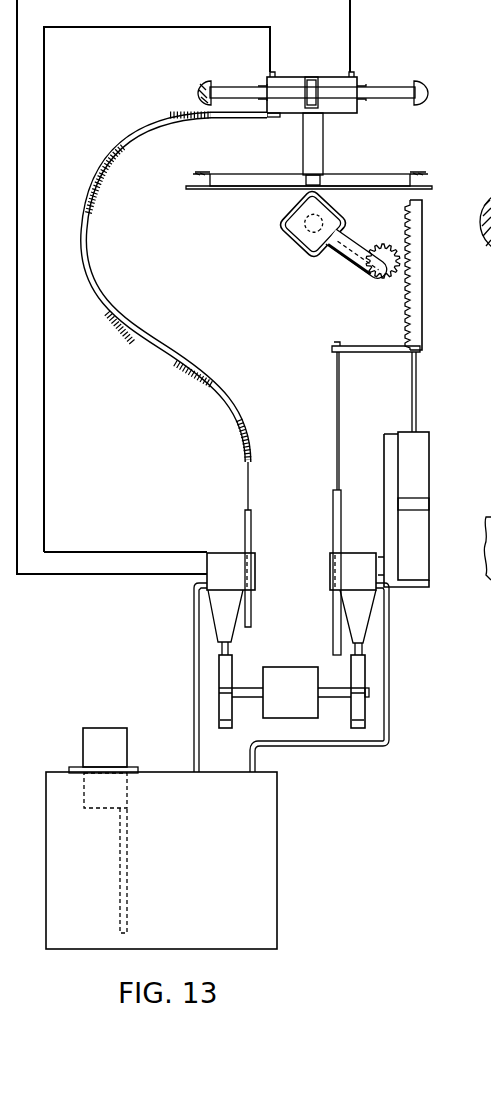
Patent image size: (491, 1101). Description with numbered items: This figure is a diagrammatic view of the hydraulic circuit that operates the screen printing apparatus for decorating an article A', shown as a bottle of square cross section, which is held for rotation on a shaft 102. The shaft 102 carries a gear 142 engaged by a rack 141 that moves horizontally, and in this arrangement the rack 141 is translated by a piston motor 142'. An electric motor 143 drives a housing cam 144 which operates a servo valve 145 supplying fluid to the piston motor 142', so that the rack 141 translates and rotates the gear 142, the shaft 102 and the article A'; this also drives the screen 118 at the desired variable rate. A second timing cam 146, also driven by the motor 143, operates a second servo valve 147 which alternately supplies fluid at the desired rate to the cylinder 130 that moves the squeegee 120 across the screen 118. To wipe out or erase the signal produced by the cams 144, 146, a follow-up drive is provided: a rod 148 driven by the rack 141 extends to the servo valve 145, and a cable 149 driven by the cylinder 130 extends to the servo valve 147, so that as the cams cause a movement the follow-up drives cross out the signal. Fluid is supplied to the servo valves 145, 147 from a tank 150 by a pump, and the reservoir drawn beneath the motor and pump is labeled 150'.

The cylinder 130 is at (336, 80).
The squeegee 120 is at (316, 186).
The screen 118 is at (379, 186).
The shaft 102 is at (351, 237).
The article A' is at (309, 234).
The gear 142 is at (373, 284).
The rack 141 is at (423, 313).
The cable 149 is at (185, 364).
The rod 148 is at (336, 393).
The piston motor 142' is at (434, 509).
The second servo valve 147 is at (220, 611).
The servo valve 145 is at (363, 612).
The electric motor 143 is at (272, 641).
The second timing cam 146 is at (229, 714).
The housing cam 144 is at (360, 715).
The tank 150 is at (123, 830).
The tank 150' is at (193, 860).